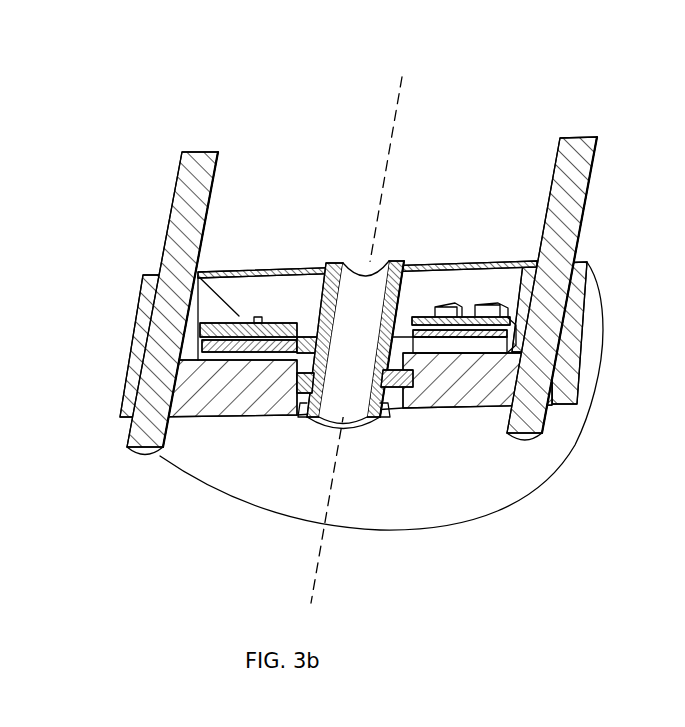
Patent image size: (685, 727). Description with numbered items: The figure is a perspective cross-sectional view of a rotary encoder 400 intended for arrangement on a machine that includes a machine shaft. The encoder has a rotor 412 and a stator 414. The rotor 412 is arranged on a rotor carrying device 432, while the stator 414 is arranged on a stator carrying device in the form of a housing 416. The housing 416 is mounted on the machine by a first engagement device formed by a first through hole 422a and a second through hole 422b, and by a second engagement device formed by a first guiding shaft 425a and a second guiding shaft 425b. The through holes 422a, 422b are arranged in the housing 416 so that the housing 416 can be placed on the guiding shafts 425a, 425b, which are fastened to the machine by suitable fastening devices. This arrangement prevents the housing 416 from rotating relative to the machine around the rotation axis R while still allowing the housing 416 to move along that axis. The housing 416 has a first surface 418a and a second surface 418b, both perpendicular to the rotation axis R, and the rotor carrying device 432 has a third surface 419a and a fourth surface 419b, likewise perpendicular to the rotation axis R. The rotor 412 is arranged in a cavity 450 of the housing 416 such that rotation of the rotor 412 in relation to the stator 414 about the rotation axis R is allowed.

The rotary encoder 400 is at (300, 73).
The rotor 412 is at (221, 351).
The stator 414 is at (242, 315).
The housing 416 is at (292, 266).
The first surface 418a is at (416, 373).
The second surface 418b is at (402, 380).
The third surface 419a is at (389, 366).
The fourth surface 419b is at (382, 400).
The first through hole 422a is at (125, 420).
The second through hole 422b is at (550, 410).
The first guiding shaft 425a is at (169, 206).
The second guiding shaft 425b is at (590, 203).
The rotor carrying device 432 is at (312, 432).
The cavity 450 is at (211, 300).